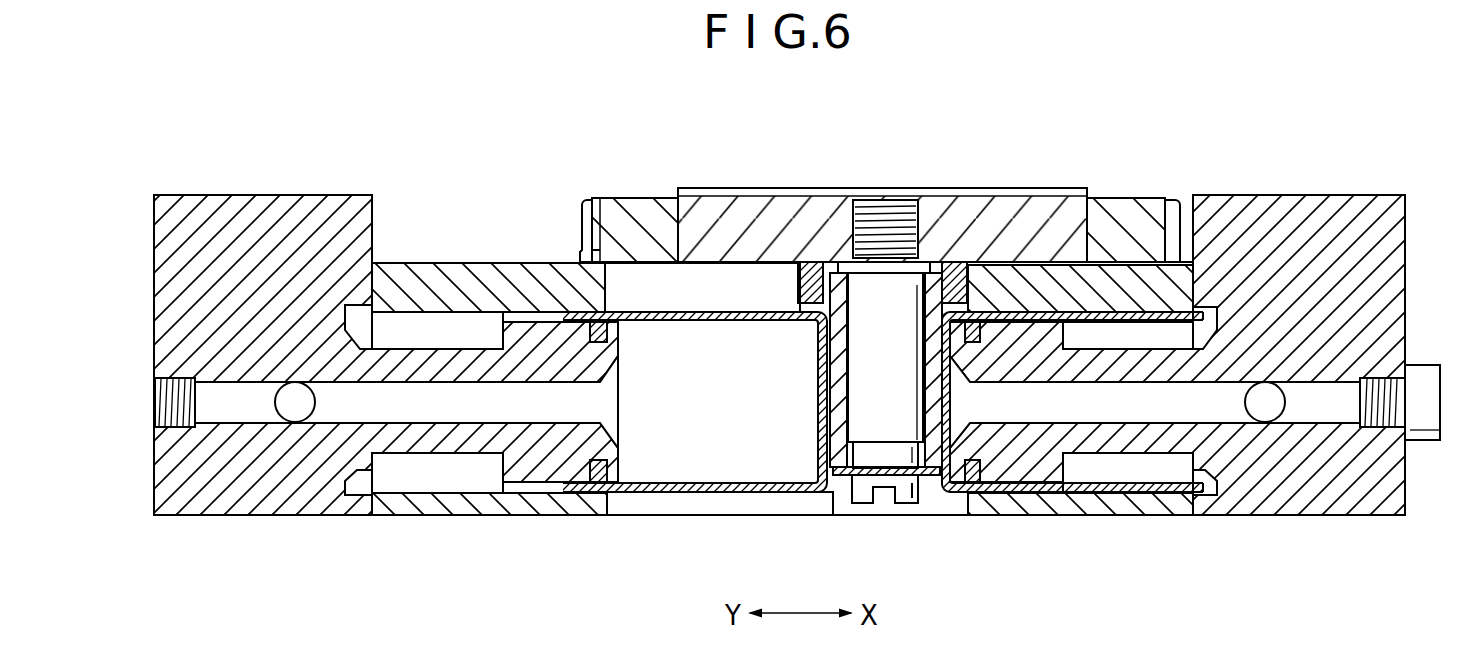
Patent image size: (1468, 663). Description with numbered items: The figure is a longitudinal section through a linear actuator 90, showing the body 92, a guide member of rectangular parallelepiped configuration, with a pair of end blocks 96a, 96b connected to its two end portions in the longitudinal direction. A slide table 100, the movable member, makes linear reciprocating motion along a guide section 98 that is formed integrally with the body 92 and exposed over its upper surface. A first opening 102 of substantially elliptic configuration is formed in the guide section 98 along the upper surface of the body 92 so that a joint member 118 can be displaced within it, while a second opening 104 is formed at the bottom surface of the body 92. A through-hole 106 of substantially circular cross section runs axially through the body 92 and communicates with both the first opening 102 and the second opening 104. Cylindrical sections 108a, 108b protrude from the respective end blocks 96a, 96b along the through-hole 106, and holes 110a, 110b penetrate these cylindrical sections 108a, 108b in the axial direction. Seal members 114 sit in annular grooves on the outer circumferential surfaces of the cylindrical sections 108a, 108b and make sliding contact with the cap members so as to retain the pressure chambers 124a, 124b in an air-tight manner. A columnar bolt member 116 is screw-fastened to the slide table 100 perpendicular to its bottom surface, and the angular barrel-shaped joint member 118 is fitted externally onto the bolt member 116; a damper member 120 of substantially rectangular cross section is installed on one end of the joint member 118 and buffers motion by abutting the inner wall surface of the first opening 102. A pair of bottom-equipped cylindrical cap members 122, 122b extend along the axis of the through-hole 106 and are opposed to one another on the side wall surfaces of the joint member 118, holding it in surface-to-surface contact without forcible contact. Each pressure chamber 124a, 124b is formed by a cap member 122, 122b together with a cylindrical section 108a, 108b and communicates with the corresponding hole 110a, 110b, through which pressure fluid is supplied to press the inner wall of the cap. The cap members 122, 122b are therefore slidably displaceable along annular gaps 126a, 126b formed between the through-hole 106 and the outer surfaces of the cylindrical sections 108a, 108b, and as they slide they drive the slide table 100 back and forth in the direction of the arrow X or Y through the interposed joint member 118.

The linear actuator 90 is at (1085, 92).
The body 92 is at (777, 518).
The end block 96a is at (262, 197).
The end block 96b is at (1333, 197).
The guide section 98 is at (483, 263).
The slide table 100 is at (1067, 188).
The first opening 102 is at (623, 277).
The second opening 104 is at (883, 340).
The through-hole 106 is at (433, 487).
The cylindrical section 108a is at (418, 350).
The cylindrical section 108b is at (1140, 355).
The hole 110a is at (495, 424).
The hole 110b is at (1172, 415).
The seal member 114 is at (595, 325).
The bolt member 116 is at (885, 427).
The joint member 118 is at (840, 455).
The damper member 120 is at (817, 262).
The cap member 122 is at (733, 310).
The cap member 122b is at (1003, 310).
The pressure chamber 124a is at (735, 420).
The pressure chamber 124b is at (1095, 420).
The annular gap 126a is at (577, 474).
The annular gap 126b is at (1047, 475).